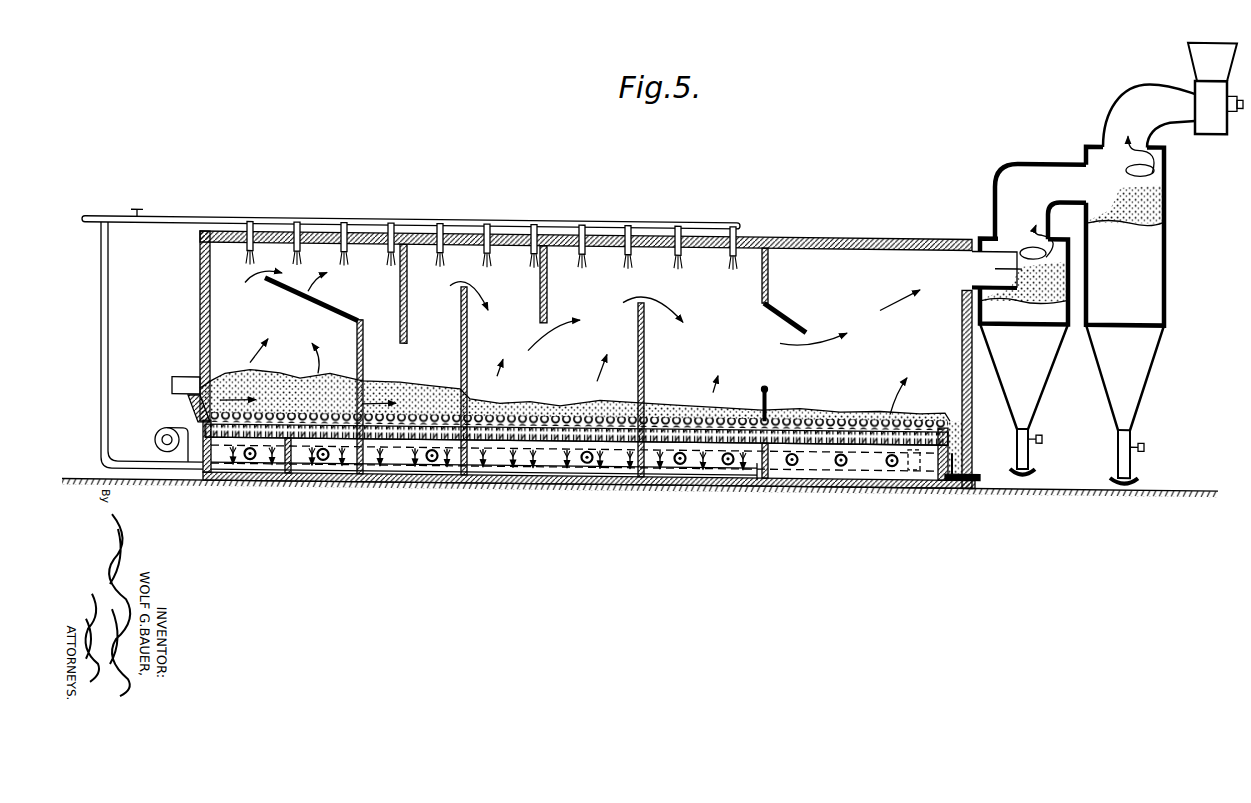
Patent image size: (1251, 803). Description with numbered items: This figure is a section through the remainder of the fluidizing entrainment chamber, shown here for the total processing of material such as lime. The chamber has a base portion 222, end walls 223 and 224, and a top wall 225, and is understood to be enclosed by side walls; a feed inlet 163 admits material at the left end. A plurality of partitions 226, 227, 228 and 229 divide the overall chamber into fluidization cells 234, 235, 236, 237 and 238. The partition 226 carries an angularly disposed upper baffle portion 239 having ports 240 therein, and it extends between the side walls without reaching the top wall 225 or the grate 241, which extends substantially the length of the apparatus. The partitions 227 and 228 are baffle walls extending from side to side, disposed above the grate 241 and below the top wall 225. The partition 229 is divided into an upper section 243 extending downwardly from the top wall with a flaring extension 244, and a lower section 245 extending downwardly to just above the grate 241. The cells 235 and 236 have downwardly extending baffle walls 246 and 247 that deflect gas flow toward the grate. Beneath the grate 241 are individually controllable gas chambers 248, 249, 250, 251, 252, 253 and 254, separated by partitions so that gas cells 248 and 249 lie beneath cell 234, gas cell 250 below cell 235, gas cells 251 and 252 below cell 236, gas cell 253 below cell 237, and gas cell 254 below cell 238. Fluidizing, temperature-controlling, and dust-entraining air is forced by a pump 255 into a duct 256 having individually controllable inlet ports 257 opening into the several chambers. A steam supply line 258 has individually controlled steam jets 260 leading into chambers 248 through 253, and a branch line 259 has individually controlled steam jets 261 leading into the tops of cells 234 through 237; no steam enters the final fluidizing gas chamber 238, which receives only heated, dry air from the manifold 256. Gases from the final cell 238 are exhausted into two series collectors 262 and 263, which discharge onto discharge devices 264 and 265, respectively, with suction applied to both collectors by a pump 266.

The feed inlet 163 is at (173, 380).
The base portion 222 is at (207, 476).
The end wall 223 is at (202, 320).
The end wall 224 is at (963, 330).
The top wall 225 is at (798, 231).
The partition 226 is at (364, 363).
The partition 227 is at (467, 341).
The partition 228 is at (645, 340).
The partition 229 is at (766, 380).
The fluidization cell 234 is at (230, 340).
The fluidization cell 235 is at (358, 350).
The fluidization cell 236 is at (578, 379).
The fluidization cell 237 is at (725, 307).
The final fluidizing gas chamber 238 is at (870, 303).
The upper baffle portion 239 is at (327, 299).
The ports 240 is at (320, 302).
The grate 241 is at (198, 413).
The upper section 243 is at (769, 271).
The flaring extension 244 is at (806, 318).
The lower section 245 is at (770, 397).
The baffle wall 246 is at (408, 315).
The baffle wall 247 is at (548, 279).
The gas cell 248 is at (257, 476).
The gas cell 249 is at (328, 479).
The gas cell 250 is at (428, 476).
The gas cell 251 is at (518, 477).
The gas cell 252 is at (600, 476).
The gas cell 253 is at (683, 476).
The gas cell 254 is at (863, 474).
The pump 255 is at (155, 441).
The duct 256 is at (193, 458).
The inlet ports 257 is at (244, 453).
The steam supply line 258 is at (107, 217).
The branch line 259 is at (318, 216).
The steam jets 260 is at (233, 477).
The steam jets 261 is at (295, 247).
The series collector 262 is at (1033, 393).
The series collector 263 is at (1135, 380).
The discharge device 264 is at (1030, 482).
The discharge device 265 is at (1125, 485).
The pump 266 is at (1216, 128).